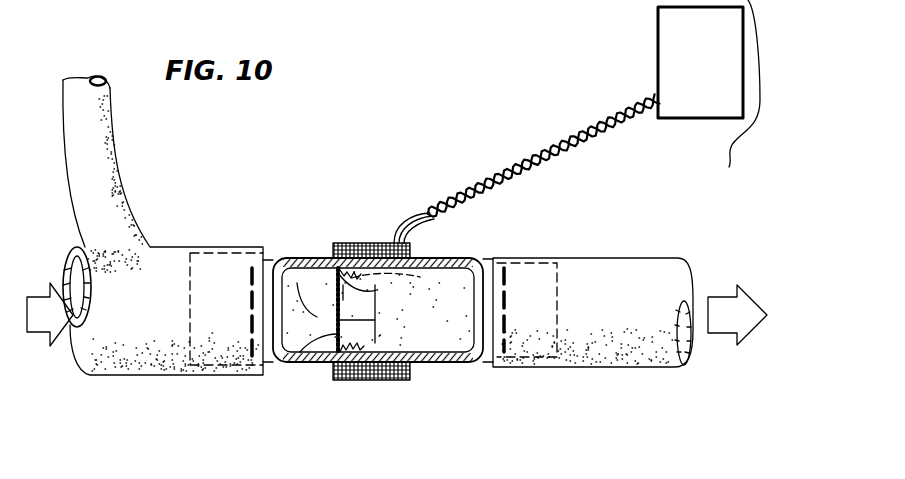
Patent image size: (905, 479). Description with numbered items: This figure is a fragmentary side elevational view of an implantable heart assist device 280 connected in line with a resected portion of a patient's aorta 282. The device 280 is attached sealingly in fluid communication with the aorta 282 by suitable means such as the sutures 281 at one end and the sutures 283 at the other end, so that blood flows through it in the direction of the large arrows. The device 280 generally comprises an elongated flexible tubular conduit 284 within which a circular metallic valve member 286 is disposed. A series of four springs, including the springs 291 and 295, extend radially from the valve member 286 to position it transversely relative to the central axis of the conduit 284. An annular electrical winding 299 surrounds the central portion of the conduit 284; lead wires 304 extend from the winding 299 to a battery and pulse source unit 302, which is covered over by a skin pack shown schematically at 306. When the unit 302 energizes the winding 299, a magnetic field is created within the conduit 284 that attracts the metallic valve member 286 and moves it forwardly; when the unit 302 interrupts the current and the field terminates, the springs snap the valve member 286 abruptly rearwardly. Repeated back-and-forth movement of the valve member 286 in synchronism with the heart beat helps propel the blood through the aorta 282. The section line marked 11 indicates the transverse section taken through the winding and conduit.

The heart assist device 280 is at (240, 382).
The sutures 281 is at (246, 277).
The aorta 282 is at (118, 358).
The sutures 283 is at (520, 356).
The tubular conduit 284 is at (428, 258).
The valve member 286 is at (335, 298).
The spring 291 is at (377, 290).
The spring 295 is at (395, 349).
The annular electrical winding 299 is at (386, 234).
The battery and pulse source unit 302 is at (692, 120).
The lead wires 304 is at (584, 123).
The skin pack 306 is at (727, 158).
The section line 11- 11 is at (303, 203).